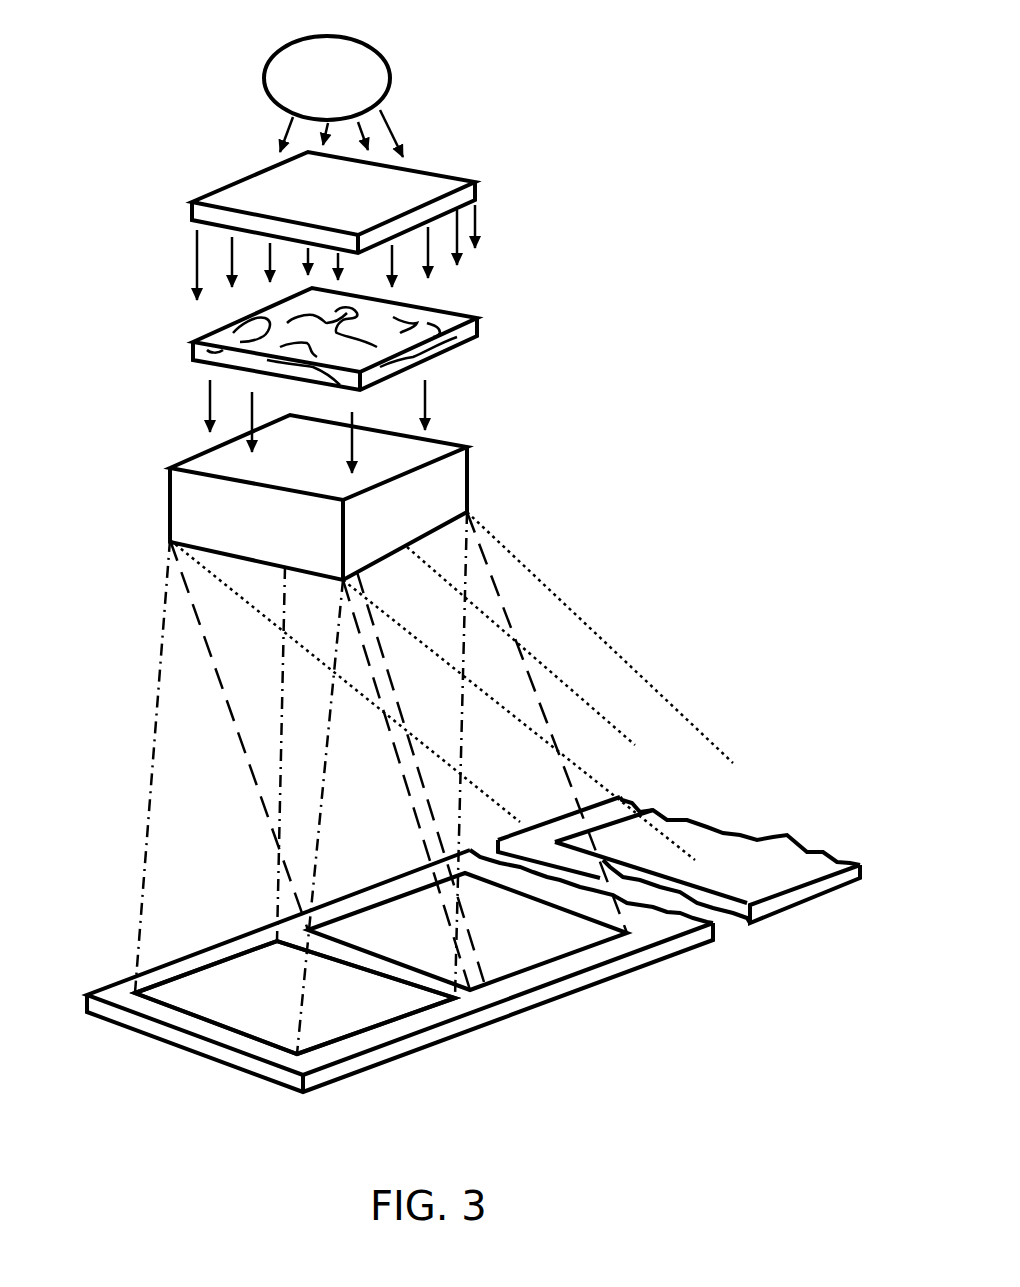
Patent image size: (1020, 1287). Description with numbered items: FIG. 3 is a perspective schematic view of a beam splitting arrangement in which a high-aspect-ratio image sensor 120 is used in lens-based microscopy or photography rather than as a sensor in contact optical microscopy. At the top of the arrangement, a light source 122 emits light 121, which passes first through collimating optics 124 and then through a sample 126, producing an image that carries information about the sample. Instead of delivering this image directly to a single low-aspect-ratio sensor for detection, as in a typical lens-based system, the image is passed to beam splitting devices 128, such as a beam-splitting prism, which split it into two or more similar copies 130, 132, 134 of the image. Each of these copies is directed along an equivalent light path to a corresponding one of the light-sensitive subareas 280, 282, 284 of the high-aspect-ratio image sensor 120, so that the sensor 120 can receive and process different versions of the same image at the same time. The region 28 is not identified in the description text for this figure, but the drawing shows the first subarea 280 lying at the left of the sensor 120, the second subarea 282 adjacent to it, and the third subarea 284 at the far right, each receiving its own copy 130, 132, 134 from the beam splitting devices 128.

The display 28 is at (170, 973).
The sensor 120 is at (697, 985).
The light 121 is at (187, 263).
The light source 122 is at (390, 80).
The collimating optics 124 is at (448, 175).
The sample 126 is at (468, 318).
The beam splitting devices 128 is at (470, 477).
The copy of the image 130 is at (162, 660).
The copy of the image 132 is at (233, 713).
The copy of the image 134 is at (573, 610).
The light-sensitive subarea 280 is at (213, 1027).
The light-sensitive subarea 282 is at (508, 975).
The light-sensitive subarea 284 is at (773, 873).